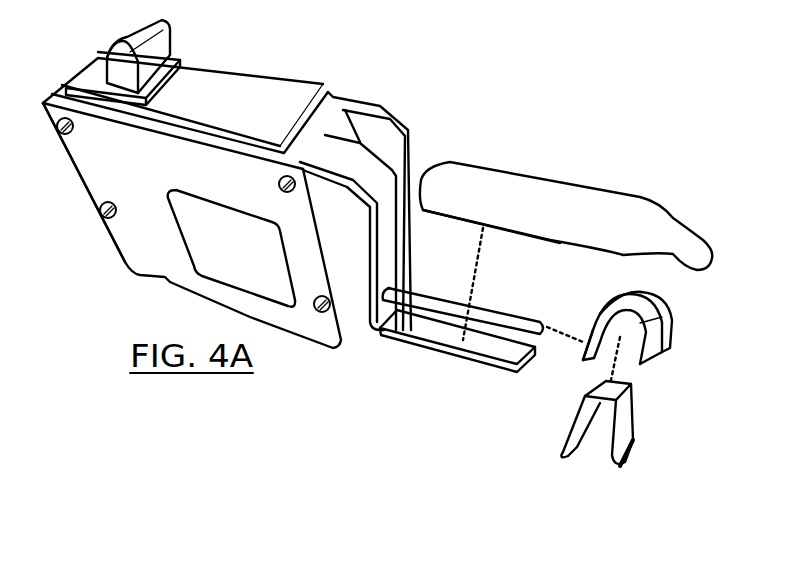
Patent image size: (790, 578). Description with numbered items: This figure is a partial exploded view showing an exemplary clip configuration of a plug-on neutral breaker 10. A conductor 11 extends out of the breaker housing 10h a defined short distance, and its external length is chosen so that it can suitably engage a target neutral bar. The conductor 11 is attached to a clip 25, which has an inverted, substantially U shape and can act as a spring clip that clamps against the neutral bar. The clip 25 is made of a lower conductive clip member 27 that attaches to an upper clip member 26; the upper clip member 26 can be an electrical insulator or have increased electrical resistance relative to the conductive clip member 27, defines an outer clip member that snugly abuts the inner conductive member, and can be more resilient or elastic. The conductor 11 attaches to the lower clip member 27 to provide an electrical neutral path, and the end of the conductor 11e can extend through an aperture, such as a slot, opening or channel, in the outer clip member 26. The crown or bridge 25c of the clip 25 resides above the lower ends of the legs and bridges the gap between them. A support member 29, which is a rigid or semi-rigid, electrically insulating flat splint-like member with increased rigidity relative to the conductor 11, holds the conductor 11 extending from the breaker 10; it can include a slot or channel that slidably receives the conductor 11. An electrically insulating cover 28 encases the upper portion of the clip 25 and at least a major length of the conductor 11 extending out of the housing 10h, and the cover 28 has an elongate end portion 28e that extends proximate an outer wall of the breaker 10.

The breaker 10 is at (285, 97).
The breaker housing 10h is at (93, 178).
The conductor 11 is at (428, 298).
The end of the conductor 11e is at (560, 312).
The clip 25 is at (550, 405).
The crown or bridge 25c is at (649, 285).
The upper clip member 26 is at (652, 340).
The lower conductive clip member 27 is at (623, 422).
The cover 28 is at (637, 210).
The elongate end portion 28e is at (480, 187).
The support member 29 is at (423, 332).